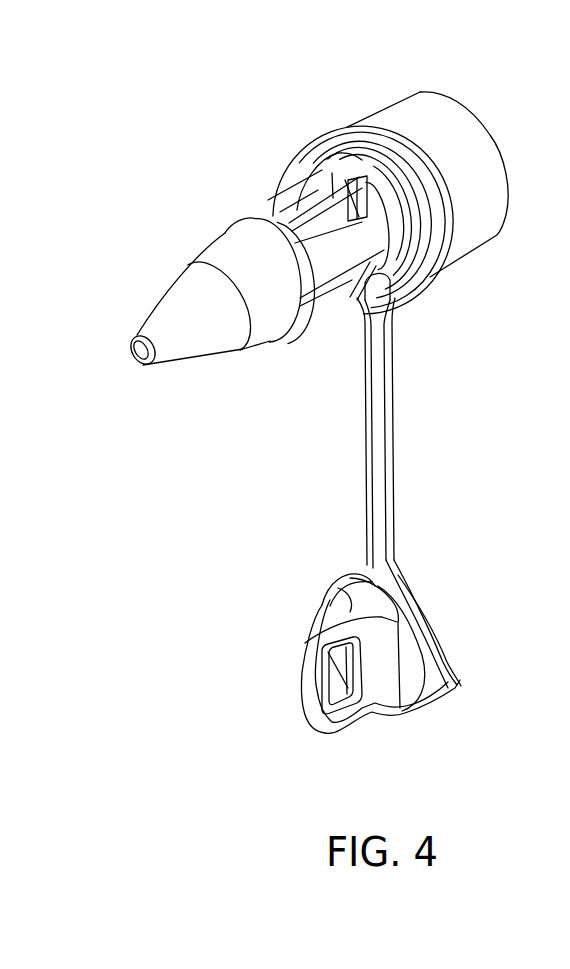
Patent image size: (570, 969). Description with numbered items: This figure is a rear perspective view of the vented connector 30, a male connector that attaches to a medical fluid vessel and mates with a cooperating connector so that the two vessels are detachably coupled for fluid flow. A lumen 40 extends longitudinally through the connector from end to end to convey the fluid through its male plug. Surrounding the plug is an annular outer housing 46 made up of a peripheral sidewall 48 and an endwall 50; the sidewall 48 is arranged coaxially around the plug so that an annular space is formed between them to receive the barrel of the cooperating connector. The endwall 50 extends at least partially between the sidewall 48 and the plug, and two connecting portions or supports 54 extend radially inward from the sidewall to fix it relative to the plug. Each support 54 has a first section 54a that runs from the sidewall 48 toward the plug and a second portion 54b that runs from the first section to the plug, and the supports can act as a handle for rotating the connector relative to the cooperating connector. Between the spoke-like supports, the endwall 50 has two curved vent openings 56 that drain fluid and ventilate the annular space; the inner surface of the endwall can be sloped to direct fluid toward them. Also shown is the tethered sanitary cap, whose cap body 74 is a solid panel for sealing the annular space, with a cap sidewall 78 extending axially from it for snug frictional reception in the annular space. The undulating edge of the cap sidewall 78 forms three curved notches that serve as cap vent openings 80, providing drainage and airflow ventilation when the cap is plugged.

The vented connector 30 is at (426, 481).
The lumen 40 is at (130, 362).
The outer housing 46 is at (375, 114).
The peripheral sidewall 48 is at (478, 246).
The endwall 50 is at (395, 272).
The connecting portion 54 is at (276, 204).
The first section 54a is at (298, 172).
The second portion 54b is at (290, 199).
The vent openings 56 is at (362, 305).
The cap body 74 is at (413, 730).
The cap sidewall 78 is at (430, 585).
The cap vent openings 80 is at (447, 633).